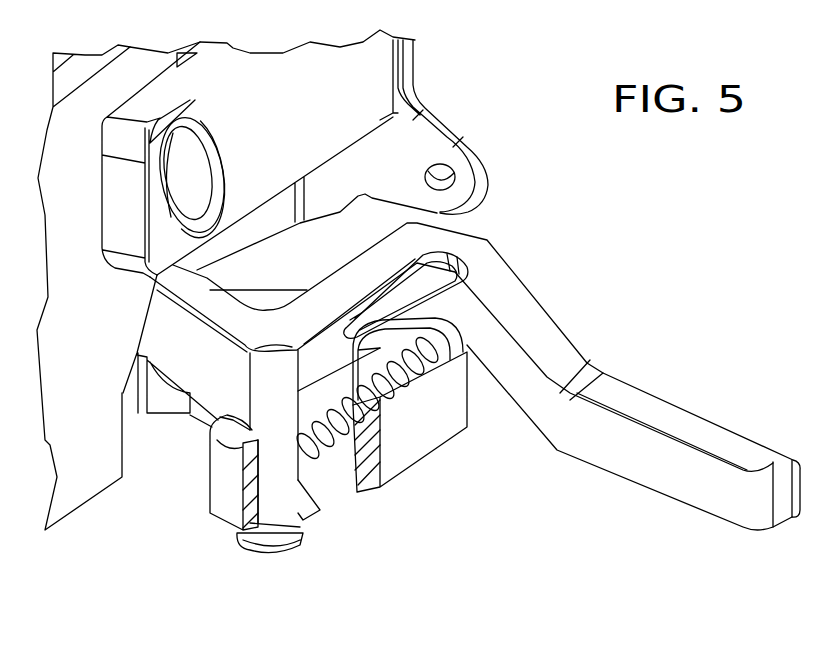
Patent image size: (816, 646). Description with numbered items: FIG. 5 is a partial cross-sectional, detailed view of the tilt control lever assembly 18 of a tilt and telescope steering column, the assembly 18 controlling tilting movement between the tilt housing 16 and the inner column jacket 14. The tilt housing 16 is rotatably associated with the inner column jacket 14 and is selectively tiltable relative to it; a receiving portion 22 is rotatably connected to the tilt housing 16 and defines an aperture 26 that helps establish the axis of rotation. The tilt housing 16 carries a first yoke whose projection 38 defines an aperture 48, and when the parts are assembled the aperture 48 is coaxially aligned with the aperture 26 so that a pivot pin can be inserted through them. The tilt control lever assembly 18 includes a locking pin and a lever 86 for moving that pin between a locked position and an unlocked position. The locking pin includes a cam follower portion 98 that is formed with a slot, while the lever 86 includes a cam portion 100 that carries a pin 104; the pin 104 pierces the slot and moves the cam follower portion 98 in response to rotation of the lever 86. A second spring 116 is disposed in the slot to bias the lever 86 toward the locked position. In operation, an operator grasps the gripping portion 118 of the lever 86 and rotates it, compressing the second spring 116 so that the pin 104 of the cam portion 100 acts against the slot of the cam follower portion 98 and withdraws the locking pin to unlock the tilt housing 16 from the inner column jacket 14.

The inner column jacket 14 is at (768, 634).
The tilt housing 16 is at (444, 86).
The tilt control lever assembly 18 is at (560, 230).
The receiving portion 22 is at (95, 510).
The aperture 26 is at (172, 167).
The projection 38 is at (287, 100).
The aperture 48 is at (198, 163).
The lever 86 is at (596, 354).
The cam follower portion 98 is at (452, 443).
The cam portion 100 is at (213, 544).
The pin 104 is at (300, 540).
The second spring 116 is at (340, 450).
The gripping portion 118 is at (753, 450).